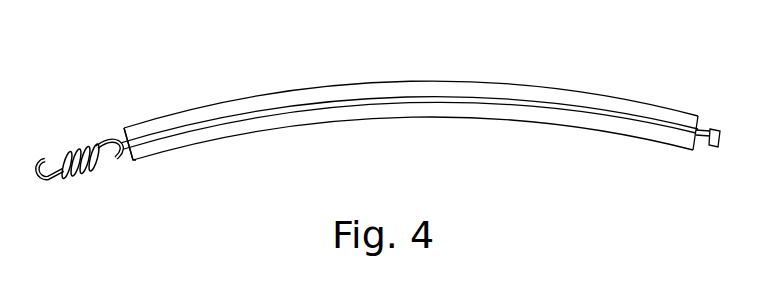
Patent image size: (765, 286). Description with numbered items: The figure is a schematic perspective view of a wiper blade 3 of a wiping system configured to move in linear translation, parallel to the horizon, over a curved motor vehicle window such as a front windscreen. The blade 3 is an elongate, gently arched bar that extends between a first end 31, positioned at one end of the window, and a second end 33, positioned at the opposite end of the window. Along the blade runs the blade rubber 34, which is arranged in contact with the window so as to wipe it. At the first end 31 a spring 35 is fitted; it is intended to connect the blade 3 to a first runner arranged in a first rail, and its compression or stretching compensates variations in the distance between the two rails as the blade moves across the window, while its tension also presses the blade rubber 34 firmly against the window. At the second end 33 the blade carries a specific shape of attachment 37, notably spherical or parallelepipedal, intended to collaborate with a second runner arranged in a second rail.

The blade 3 is at (386, 125).
The first end 31 is at (132, 163).
The second end 33 is at (695, 152).
The blade rubber 34 is at (367, 110).
The spring 35 is at (84, 148).
The shape of attachment 37 is at (713, 128).